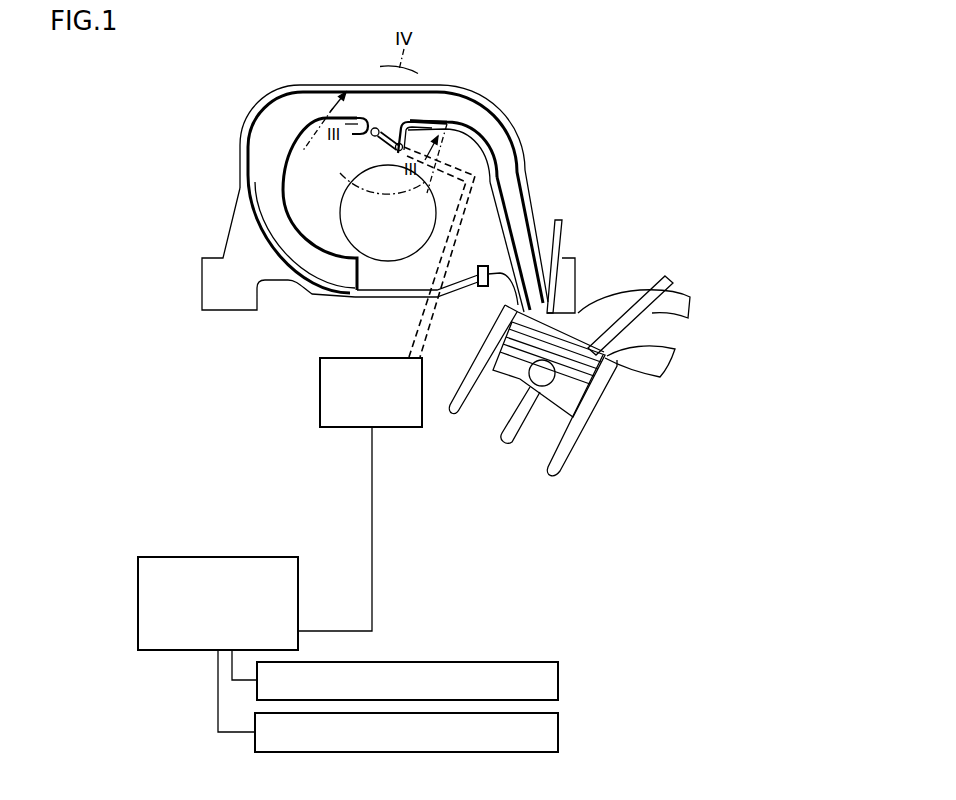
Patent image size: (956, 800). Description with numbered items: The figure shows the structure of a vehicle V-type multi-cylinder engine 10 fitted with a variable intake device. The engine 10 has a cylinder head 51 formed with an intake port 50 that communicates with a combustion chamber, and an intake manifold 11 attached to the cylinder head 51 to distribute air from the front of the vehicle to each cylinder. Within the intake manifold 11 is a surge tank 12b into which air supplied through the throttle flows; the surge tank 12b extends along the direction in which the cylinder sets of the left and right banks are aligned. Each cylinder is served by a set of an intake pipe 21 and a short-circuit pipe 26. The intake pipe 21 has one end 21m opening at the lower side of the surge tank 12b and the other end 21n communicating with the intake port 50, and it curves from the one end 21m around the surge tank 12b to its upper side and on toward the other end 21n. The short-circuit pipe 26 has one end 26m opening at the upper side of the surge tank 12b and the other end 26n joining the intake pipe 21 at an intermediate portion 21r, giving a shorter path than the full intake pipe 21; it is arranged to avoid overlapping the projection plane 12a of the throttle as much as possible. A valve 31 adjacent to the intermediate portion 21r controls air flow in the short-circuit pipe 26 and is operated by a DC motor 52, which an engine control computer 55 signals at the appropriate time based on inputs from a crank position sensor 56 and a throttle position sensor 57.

The engine 10 is at (233, 88).
The intake manifold 11 is at (528, 143).
The projection plane of the throttle 12a is at (363, 208).
The surge tank 12b is at (308, 177).
The intake pipe 21 is at (532, 178).
The one end of intake pipe 21m is at (363, 295).
The other end of intake pipe 21n is at (517, 327).
The intermediate portion of intake pipe 21r is at (385, 108).
The short-circuit pipe 26 is at (441, 125).
The one end of short-circuit pipe 26m is at (336, 136).
The other end of short-circuit pipe 26n is at (441, 122).
The valve 31 is at (374, 129).
The intake port 50 is at (573, 308).
The cylinder head 51 is at (617, 290).
The DC motor 52 is at (410, 427).
The engine control computer 55 is at (138, 603).
The crank position sensor 56 is at (560, 683).
The throttle position sensor 57 is at (558, 733).